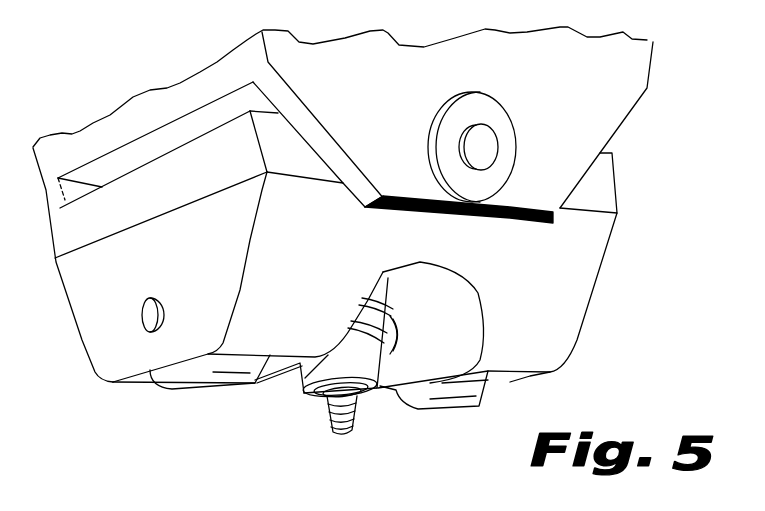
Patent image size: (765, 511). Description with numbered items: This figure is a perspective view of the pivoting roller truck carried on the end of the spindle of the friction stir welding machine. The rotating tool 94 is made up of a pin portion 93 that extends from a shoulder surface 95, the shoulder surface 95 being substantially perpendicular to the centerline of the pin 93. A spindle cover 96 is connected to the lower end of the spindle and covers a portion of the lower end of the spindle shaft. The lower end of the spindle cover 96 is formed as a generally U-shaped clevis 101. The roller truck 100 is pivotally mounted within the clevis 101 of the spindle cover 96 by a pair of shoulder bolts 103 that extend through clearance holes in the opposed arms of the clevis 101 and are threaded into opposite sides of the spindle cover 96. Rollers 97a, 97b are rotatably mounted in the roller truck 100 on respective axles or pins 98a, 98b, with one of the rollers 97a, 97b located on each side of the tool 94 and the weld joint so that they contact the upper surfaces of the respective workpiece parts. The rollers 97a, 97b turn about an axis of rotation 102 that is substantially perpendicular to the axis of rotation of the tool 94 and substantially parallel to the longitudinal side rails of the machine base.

The pin portion 93 is at (355, 432).
The rotating tool 94 is at (324, 421).
The shoulder surface 95 is at (362, 400).
The spindle cover 96 is at (176, 95).
The roller 97a is at (217, 380).
The roller 97b is at (455, 405).
The axle or pin 98a is at (167, 302).
The axle or pin 98b is at (405, 333).
The roller truck 100 is at (583, 268).
The clevis 101 is at (620, 127).
The axis of rotation 102 is at (143, 313).
The shoulder bolts 103 is at (485, 145).